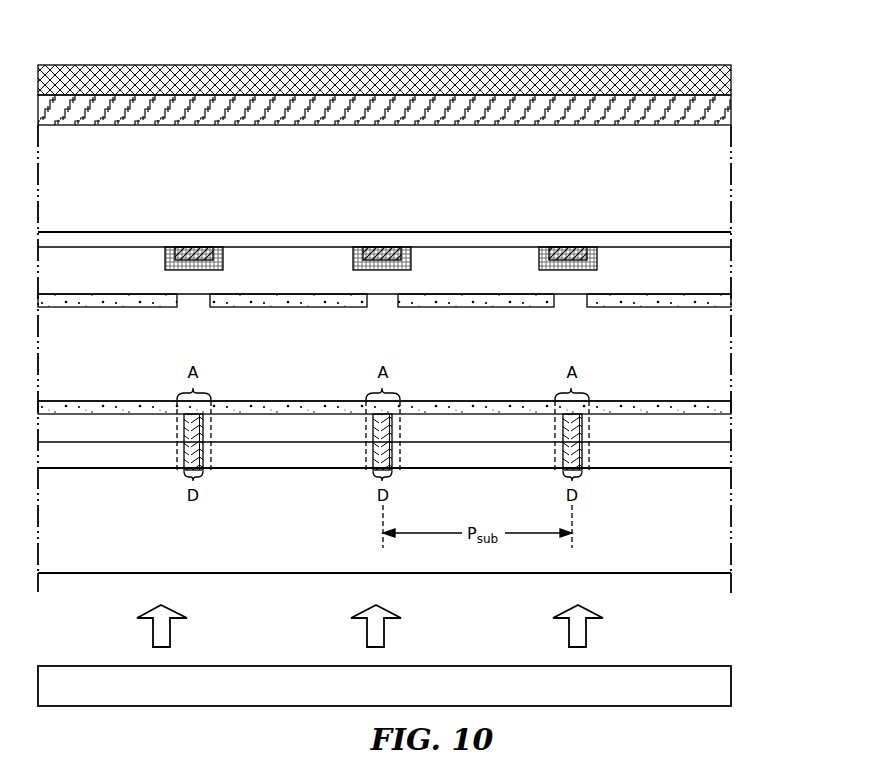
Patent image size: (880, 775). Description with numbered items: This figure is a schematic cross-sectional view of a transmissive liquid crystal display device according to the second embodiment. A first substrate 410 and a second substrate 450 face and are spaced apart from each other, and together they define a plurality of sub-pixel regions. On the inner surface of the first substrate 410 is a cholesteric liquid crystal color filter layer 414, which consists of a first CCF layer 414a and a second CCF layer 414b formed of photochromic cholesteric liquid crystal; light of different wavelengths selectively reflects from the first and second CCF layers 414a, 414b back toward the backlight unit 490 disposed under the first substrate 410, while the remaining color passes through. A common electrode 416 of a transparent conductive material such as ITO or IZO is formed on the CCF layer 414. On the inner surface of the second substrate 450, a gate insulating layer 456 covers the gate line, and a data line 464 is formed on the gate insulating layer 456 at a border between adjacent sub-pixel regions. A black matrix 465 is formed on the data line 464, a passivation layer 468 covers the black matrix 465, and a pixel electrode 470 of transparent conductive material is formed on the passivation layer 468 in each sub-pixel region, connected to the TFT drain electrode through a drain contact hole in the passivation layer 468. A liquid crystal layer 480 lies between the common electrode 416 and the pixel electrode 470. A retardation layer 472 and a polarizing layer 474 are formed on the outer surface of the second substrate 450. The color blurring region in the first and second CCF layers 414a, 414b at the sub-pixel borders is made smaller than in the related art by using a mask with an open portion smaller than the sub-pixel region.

The first substrate 410 is at (713, 523).
The cholesteric liquid crystal color filter layer 414 is at (449, 435).
The first CCF layer 414a is at (715, 457).
The second CCF layer 414b is at (715, 428).
The common electrode 416 is at (80, 408).
The second substrate 450 is at (715, 156).
The gate insulating layer 456 is at (662, 238).
The data line 464 is at (184, 247).
The black matrix 465 is at (218, 247).
The passivation layer 468 is at (473, 262).
The pixel electrode 470 is at (122, 307).
The retardation layer 472 is at (102, 105).
The polarizing layer 474 is at (172, 78).
The liquid crystal layer 480 is at (713, 353).
The backlight unit 490 is at (733, 666).